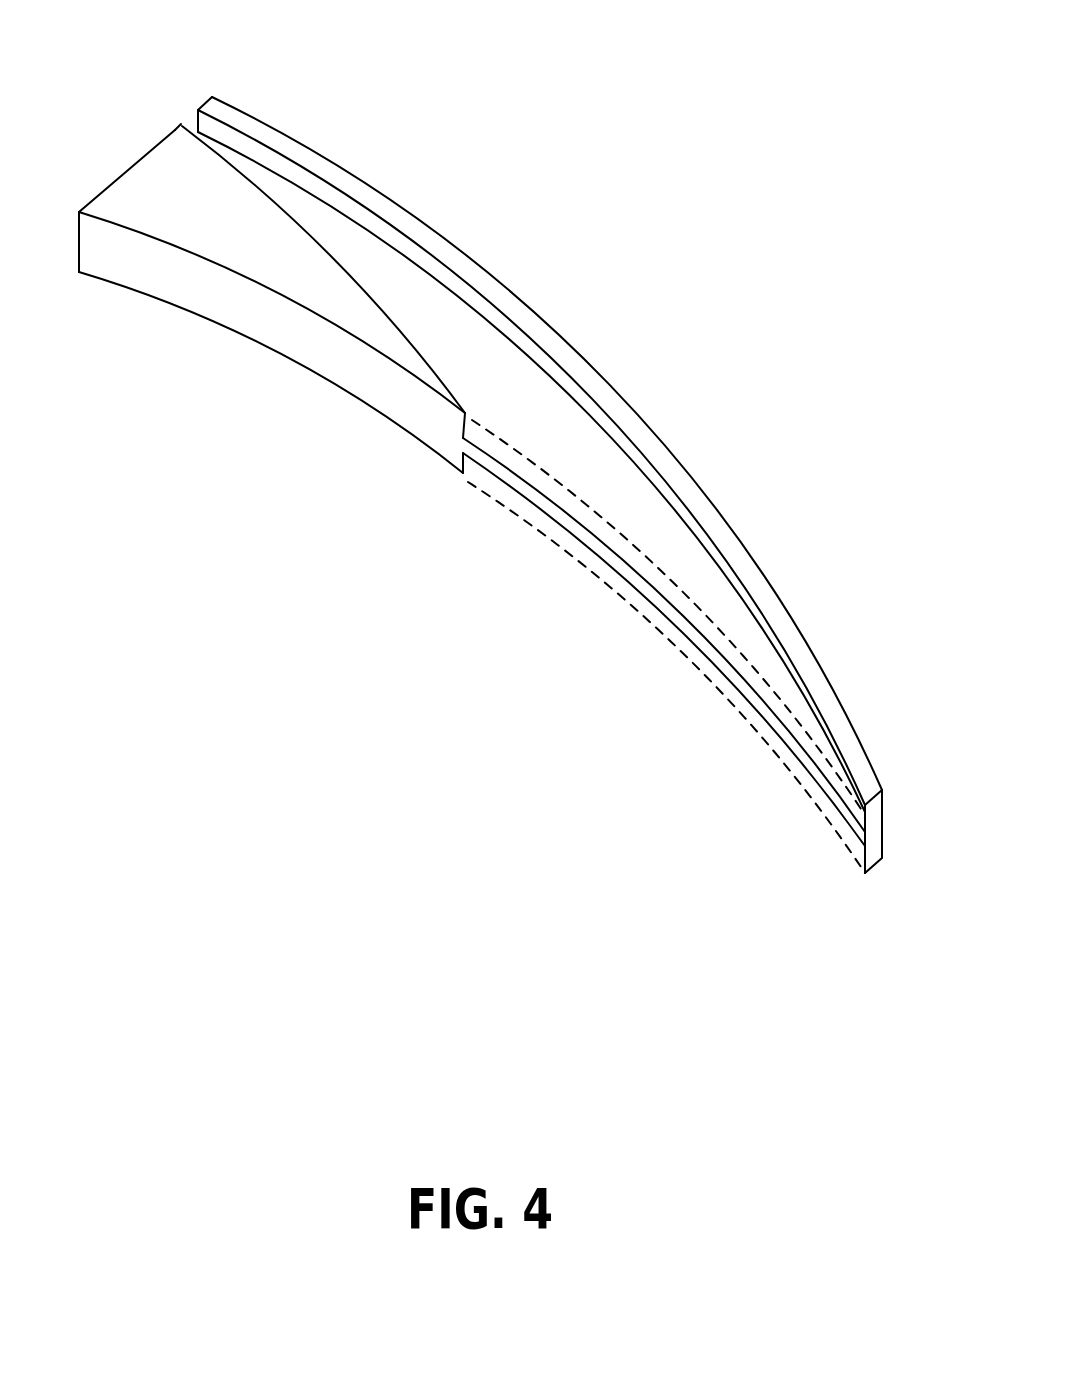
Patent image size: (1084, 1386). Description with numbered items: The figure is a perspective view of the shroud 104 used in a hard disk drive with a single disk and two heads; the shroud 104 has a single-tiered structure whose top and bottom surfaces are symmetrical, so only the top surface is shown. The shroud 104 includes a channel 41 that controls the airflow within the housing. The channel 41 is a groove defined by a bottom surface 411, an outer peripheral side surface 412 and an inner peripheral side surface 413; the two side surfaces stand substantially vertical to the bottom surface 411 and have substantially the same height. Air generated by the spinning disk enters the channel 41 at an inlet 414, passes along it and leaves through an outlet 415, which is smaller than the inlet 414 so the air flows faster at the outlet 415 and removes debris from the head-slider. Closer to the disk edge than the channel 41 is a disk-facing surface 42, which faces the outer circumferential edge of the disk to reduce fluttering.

The shroud 104 is at (387, 30).
The channel 41 is at (422, 307).
The disk-facing surface 42 is at (219, 300).
The bottom surface 411 is at (610, 525).
The outer peripheral side surface 412 is at (410, 252).
The inner peripheral side surface 413 is at (362, 282).
The inlet 414 is at (620, 598).
The outlet 415 is at (178, 122).